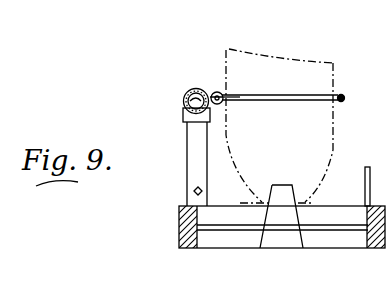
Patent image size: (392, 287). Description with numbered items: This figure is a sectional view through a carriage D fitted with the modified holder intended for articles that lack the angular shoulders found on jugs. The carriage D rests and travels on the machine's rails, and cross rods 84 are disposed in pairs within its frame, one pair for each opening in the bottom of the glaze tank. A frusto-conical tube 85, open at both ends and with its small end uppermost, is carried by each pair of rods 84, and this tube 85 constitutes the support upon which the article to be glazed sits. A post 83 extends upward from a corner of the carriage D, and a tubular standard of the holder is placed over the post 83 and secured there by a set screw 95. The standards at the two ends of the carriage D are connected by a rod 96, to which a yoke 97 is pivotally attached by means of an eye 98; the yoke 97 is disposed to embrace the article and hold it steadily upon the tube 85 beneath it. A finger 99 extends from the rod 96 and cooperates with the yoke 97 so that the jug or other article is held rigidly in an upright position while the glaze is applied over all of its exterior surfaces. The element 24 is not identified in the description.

The support column 24 is at (187, 155).
The post 83 is at (368, 167).
The cross rod 84 is at (318, 233).
The frusto-conical tube 85 is at (290, 193).
The set screw 95 is at (194, 191).
The rod 96 is at (183, 103).
The yoke 97 is at (318, 96).
The eye 98 is at (214, 92).
The finger 99 is at (240, 99).
The carriage D is at (179, 243).